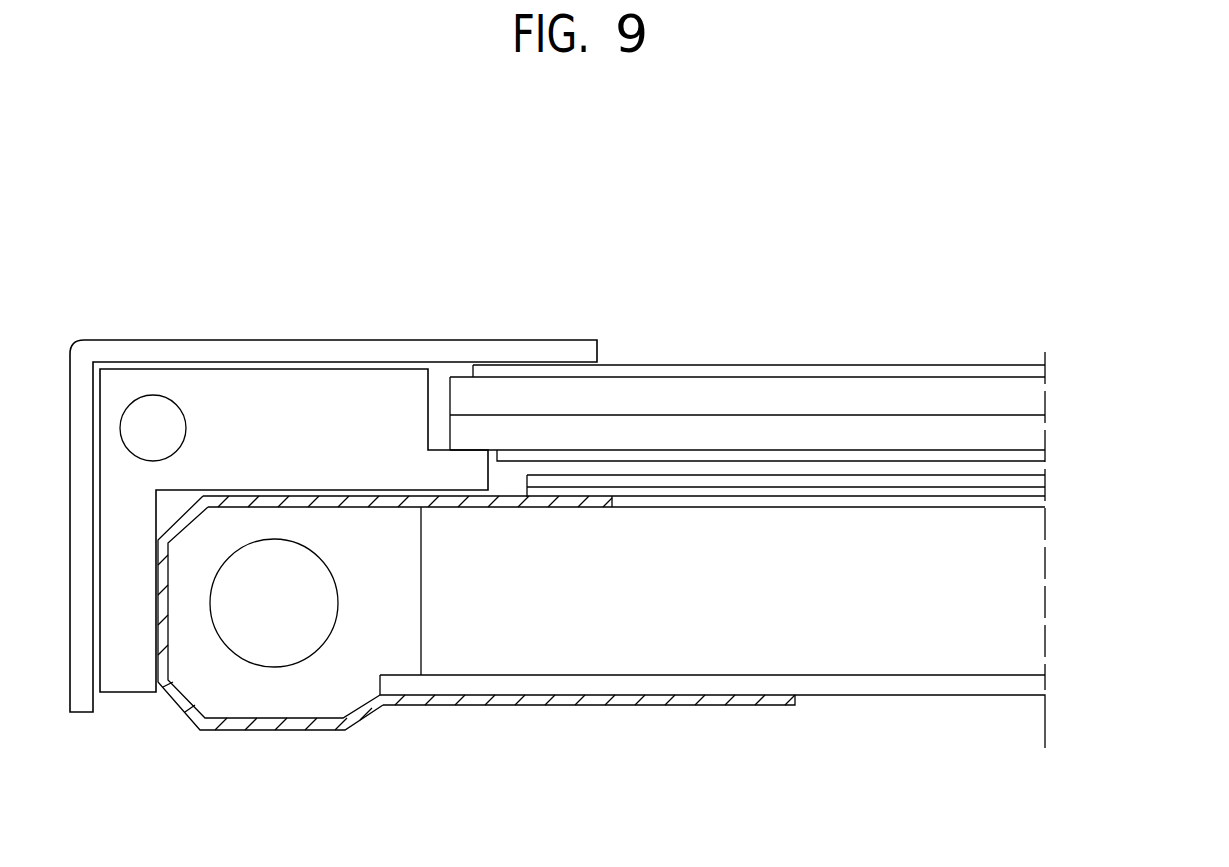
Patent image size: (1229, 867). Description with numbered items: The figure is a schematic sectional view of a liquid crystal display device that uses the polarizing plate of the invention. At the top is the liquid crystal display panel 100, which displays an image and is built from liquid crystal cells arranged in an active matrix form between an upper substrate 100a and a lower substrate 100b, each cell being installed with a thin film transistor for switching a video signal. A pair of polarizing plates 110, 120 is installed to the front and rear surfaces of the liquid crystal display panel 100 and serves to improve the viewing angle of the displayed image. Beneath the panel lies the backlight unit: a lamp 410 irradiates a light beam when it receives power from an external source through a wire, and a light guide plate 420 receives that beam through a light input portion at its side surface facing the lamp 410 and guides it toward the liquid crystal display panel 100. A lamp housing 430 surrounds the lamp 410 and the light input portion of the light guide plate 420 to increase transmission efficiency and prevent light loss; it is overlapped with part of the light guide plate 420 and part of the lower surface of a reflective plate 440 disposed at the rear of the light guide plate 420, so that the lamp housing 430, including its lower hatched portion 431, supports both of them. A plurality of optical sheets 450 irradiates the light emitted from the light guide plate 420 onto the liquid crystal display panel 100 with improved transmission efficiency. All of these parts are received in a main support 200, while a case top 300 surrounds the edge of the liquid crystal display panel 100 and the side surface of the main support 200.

The liquid crystal display panel 100 is at (829, 413).
The upper substrate 100a is at (1047, 398).
The lower substrate 100b is at (1047, 430).
The polarizing plate 110 is at (1047, 372).
The polarizing plate 120 is at (1047, 458).
The main support 200 is at (128, 677).
The case top 300 is at (291, 352).
The lamp 410 is at (243, 648).
The light guide plate 420 is at (1047, 585).
The lamp housing 430 is at (325, 718).
The lower reflector portion 431 is at (497, 718).
The reflective plate 440 is at (675, 688).
The optical sheets 450 is at (1047, 492).